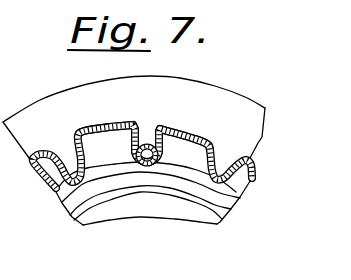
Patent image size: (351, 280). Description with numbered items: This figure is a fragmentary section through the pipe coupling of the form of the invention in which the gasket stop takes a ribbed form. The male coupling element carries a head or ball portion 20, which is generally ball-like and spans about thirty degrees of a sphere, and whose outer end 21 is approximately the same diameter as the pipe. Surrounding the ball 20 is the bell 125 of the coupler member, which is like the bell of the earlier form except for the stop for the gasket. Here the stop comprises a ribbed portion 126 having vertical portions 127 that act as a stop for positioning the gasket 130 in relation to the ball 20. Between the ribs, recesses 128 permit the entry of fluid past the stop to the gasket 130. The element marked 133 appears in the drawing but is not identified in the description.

The head or ball portion 20 is at (72, 198).
The outer end 21 is at (187, 200).
The bell 125 is at (193, 92).
The ribbed portion 126 is at (84, 138).
The vertical portions 127 is at (142, 165).
The recesses 128 is at (184, 128).
The gasket 130 is at (181, 155).
The shoulder rib 133 is at (107, 168).